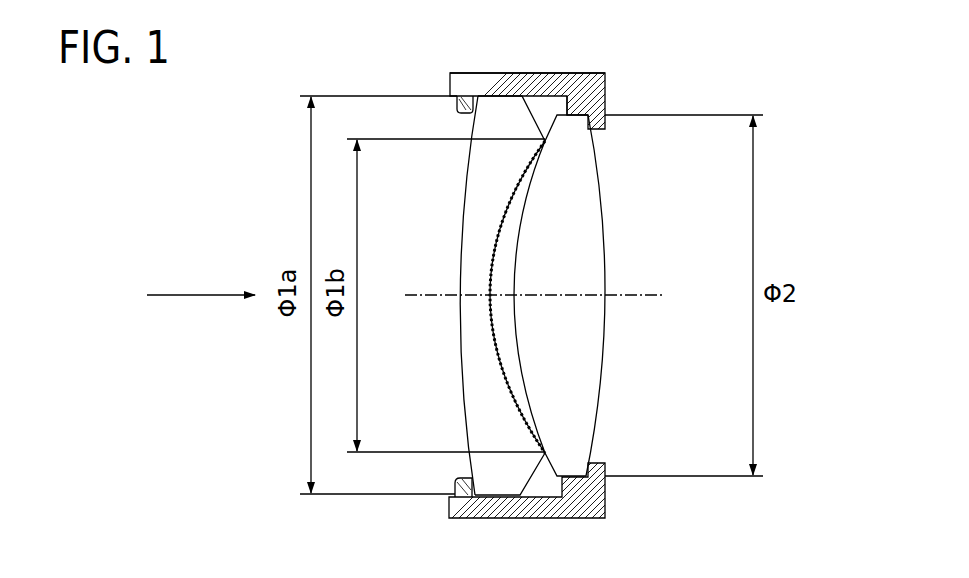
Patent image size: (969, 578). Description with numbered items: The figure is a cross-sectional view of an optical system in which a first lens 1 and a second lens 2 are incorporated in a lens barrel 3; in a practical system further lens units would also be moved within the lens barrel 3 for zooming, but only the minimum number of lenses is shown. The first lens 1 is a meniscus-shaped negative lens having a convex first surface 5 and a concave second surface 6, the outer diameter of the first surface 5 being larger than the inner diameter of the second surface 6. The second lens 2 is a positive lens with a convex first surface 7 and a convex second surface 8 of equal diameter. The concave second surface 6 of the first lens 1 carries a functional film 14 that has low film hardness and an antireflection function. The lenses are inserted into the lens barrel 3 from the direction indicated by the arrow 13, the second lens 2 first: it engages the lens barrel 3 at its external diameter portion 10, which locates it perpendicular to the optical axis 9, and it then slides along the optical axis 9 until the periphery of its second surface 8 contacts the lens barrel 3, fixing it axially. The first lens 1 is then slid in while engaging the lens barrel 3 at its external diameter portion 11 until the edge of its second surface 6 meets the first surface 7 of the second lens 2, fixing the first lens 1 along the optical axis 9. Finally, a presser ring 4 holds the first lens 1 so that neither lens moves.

The first lens 1 is at (478, 295).
The second lens 2 is at (590, 295).
The lens barrel 3 is at (601, 74).
The presser ring 4 is at (457, 96).
The first surface 5 is at (461, 275).
The second surface 6 is at (492, 340).
The first surface 7 is at (517, 273).
The second surface 8 is at (604, 340).
The optical axis 9 is at (620, 296).
The external diameter portion 10 is at (568, 112).
The external diameter portion 11 is at (502, 73).
The arrow 13 is at (181, 295).
The functional film 14 is at (500, 356).